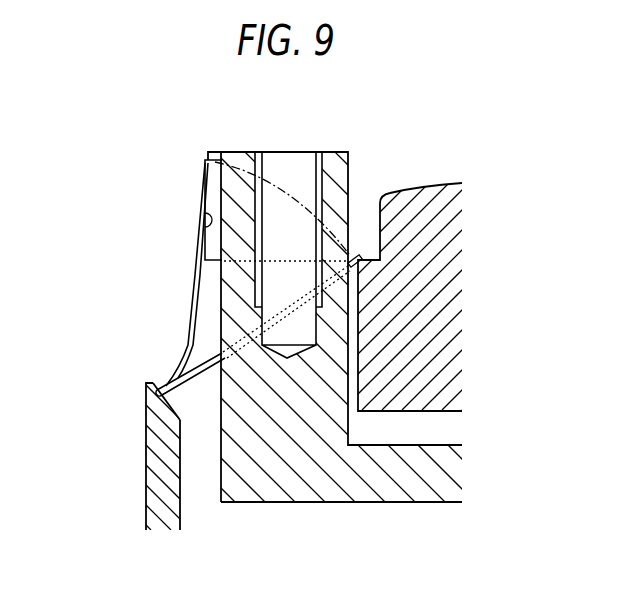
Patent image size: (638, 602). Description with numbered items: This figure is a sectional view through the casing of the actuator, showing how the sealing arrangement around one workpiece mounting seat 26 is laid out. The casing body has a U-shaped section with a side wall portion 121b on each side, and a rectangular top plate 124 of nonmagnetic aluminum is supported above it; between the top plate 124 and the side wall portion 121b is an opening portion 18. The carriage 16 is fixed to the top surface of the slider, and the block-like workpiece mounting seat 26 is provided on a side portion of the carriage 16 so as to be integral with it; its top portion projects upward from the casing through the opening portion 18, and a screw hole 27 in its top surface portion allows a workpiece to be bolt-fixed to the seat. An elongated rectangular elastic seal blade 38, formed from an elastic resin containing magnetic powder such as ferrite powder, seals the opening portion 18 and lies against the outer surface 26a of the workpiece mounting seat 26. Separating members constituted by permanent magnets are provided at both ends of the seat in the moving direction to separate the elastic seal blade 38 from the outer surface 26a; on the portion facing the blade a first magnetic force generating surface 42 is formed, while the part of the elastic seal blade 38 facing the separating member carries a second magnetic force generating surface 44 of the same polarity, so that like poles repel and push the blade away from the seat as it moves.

The carriage 16 is at (361, 490).
The opening portion 18 is at (196, 437).
The workpiece mounting seat 26 is at (238, 308).
The outer surface of workpiece mounting seat 26a is at (221, 290).
The screw hole 27 is at (318, 170).
The elastic seal blade 38 is at (207, 169).
The first magnetic force generating surface 42 is at (208, 186).
The second magnetic force generating surface 44 is at (206, 222).
The side wall portion 121b is at (157, 476).
The top plate 124 is at (427, 200).